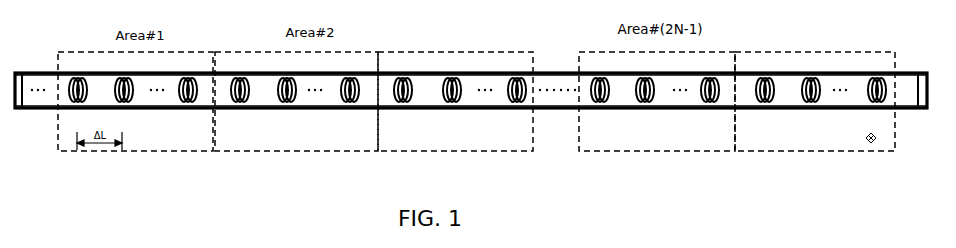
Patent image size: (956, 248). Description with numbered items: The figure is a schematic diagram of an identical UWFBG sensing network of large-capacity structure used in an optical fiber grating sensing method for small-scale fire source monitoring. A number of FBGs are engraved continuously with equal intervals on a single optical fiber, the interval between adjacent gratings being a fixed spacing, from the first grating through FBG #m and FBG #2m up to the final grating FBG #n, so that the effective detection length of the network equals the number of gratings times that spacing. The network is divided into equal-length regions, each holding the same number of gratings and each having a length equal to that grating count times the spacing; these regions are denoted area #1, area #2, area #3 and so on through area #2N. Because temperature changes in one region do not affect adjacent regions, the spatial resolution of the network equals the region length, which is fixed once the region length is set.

The area # 1 is at (82, 100).
The area # 2 is at (131, 100).
The FBG # m is at (179, 100).
The FBG # 2m is at (338, 105).
The FBG # n is at (864, 103).
The area # 3 is at (455, 86).
The area # 2N is at (815, 87).